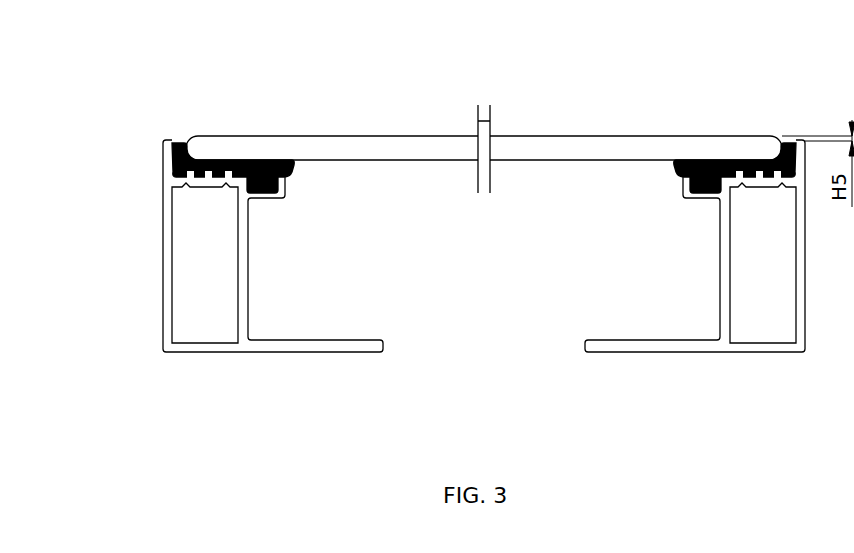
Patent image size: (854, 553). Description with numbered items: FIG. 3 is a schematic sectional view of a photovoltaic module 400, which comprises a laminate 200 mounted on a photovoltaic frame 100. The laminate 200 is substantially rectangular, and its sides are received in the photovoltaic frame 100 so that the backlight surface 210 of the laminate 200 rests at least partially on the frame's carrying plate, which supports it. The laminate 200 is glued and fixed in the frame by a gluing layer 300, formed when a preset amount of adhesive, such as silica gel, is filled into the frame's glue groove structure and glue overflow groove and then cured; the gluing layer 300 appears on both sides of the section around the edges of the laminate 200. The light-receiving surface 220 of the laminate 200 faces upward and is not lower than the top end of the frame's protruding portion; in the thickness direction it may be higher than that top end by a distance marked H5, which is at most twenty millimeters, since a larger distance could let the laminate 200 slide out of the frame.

The photovoltaic frame 100 is at (255, 343).
The laminate 200 is at (252, 137).
The backlight surface 210 is at (555, 160).
The light-receiving surface 220 is at (375, 137).
The gluing layer 300 is at (710, 158).
The photovoltaic module 400 is at (189, 53).